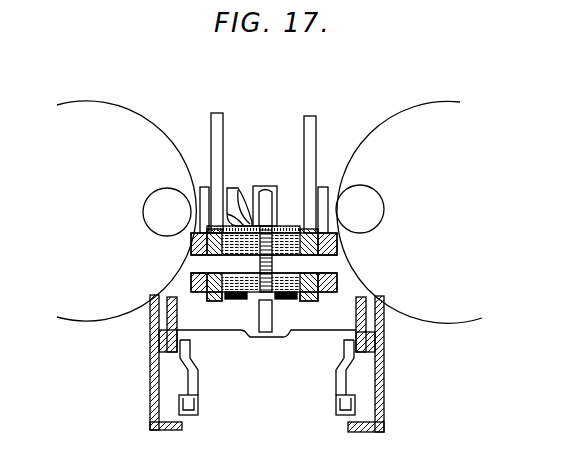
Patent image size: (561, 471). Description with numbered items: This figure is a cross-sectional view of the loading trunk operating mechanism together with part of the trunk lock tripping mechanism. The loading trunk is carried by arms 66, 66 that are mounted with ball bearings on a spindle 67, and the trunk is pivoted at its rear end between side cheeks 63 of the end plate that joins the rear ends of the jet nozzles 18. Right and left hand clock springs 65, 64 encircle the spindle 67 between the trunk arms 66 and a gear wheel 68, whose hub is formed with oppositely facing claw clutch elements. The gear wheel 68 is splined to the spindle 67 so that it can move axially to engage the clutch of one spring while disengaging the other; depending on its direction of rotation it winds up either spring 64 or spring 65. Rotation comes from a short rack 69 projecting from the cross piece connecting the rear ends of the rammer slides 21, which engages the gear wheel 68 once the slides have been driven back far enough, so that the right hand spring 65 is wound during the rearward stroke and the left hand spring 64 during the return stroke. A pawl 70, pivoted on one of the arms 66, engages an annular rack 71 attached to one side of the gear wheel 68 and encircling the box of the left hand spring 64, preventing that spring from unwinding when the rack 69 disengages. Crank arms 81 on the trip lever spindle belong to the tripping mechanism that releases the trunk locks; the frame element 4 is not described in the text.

The frame 4 is at (167, 332).
The jet nozzle 18 is at (132, 122).
The rammer slide 21 is at (366, 342).
The side cheek 63 is at (193, 284).
The left hand clock spring 64 is at (236, 301).
The right hand clock spring 65 is at (296, 301).
The arm 66 is at (301, 123).
The spindle 67 is at (207, 260).
The gear wheel 68 is at (271, 226).
The rack 69 is at (268, 322).
The pawl 70 is at (233, 190).
The annular rack 71 is at (207, 229).
The crank arm 81 is at (184, 380).